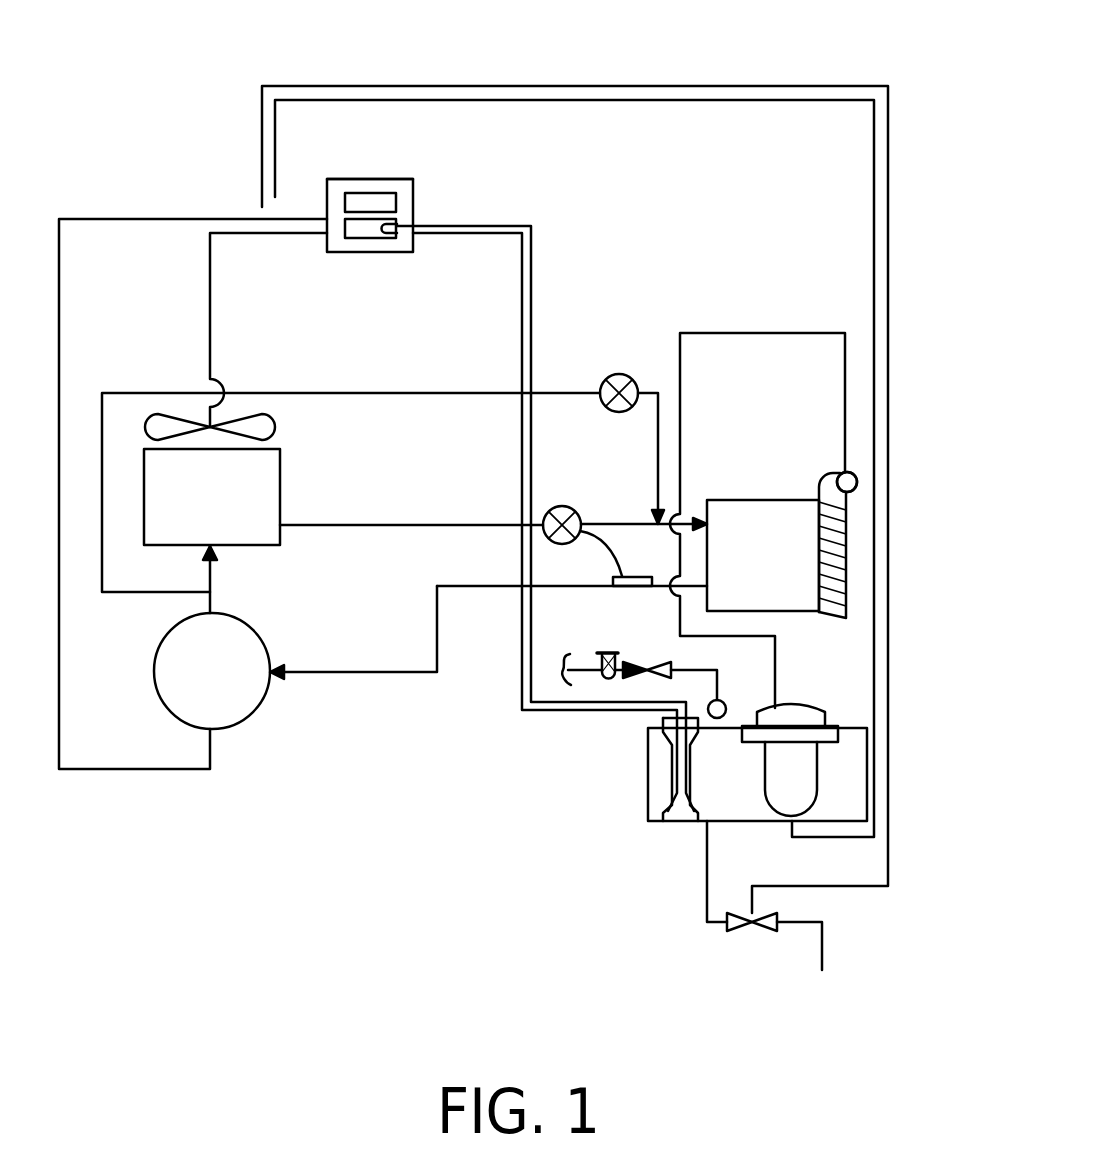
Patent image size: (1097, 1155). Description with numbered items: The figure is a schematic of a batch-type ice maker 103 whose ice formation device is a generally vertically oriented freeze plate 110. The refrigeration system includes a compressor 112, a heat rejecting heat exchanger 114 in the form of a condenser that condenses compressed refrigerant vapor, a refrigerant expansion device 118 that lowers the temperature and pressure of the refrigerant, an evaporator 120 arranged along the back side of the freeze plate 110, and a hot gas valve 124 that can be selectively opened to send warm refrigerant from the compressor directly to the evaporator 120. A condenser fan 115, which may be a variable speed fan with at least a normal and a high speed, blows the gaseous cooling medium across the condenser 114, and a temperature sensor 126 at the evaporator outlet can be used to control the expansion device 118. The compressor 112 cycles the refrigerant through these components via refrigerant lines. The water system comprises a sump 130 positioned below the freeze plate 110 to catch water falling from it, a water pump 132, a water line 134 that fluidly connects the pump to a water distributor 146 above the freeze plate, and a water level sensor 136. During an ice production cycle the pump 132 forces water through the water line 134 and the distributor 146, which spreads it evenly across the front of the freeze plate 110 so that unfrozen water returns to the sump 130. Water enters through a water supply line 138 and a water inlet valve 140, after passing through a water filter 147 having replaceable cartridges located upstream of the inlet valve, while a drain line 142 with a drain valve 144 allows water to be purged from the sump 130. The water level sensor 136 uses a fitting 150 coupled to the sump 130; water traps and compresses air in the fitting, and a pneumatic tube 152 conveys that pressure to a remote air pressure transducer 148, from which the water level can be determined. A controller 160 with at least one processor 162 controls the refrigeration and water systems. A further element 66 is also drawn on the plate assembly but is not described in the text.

The ice maker 103 is at (153, 92).
The processor 162 is at (355, 194).
The controller 160 is at (397, 179).
The pneumatic tube 152 is at (518, 224).
The air pressure transducer 148 is at (365, 239).
The water line 134 is at (757, 333).
The hot gas valve 124 is at (620, 373).
The evaporator 120 is at (731, 499).
The sensor 66 is at (833, 470).
The water distributor 146 is at (857, 481).
The condenser fan 115 is at (272, 427).
The heat rejecting heat exchanger 114 is at (280, 470).
The refrigerant expansion device 118 is at (565, 506).
The temperature sensor 126 is at (645, 577).
The freeze plate 110 is at (850, 612).
The water supply line 138 is at (585, 650).
The water inlet valve 140 is at (637, 661).
The compressor 112 is at (170, 713).
The water filter 147 is at (602, 677).
The water pump 132 is at (828, 785).
The water level sensor 136 is at (665, 779).
The fitting 150 is at (706, 822).
The sump 130 is at (636, 838).
The drain line 142 is at (692, 943).
The drain valve 144 is at (757, 932).